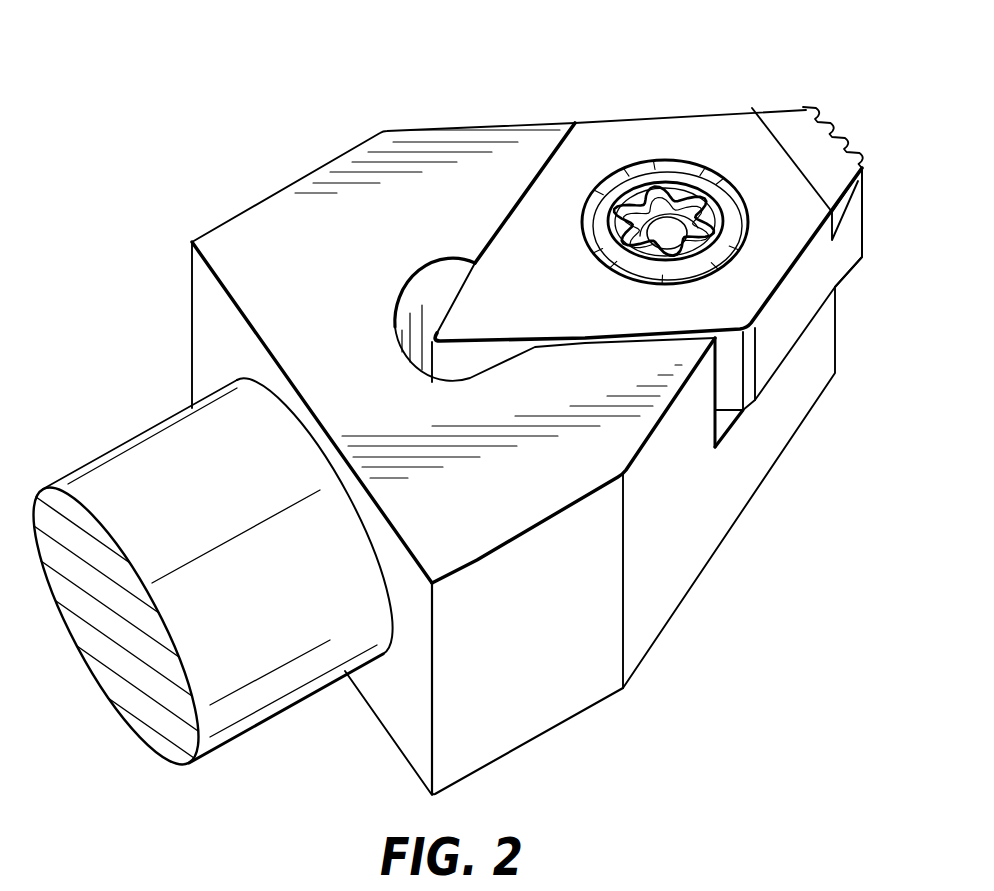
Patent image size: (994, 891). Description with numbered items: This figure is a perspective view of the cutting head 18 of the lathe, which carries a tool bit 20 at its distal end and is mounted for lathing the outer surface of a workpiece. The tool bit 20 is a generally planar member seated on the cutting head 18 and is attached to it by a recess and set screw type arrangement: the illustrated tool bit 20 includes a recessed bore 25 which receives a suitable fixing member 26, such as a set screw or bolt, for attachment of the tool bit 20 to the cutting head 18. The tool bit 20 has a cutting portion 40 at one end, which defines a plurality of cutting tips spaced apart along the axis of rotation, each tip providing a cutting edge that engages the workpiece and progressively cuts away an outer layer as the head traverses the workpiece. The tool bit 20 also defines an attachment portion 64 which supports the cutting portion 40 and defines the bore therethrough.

The cutting head 18 is at (137, 460).
The tool bit 20 is at (447, 404).
The recessed bore 25 is at (605, 186).
The fixing member 26 is at (672, 186).
The cutting portion 40 is at (792, 123).
The attachment portion 64 is at (838, 260).